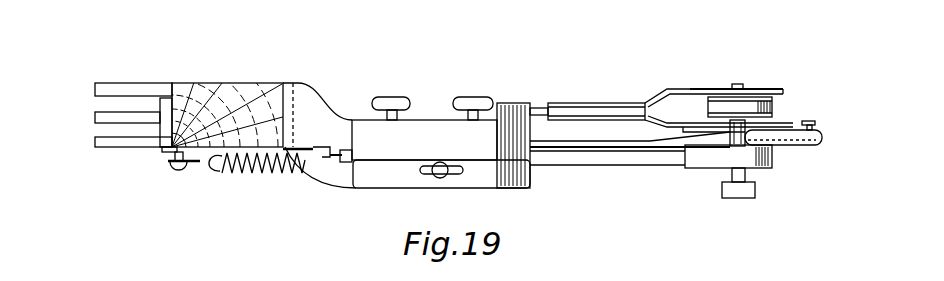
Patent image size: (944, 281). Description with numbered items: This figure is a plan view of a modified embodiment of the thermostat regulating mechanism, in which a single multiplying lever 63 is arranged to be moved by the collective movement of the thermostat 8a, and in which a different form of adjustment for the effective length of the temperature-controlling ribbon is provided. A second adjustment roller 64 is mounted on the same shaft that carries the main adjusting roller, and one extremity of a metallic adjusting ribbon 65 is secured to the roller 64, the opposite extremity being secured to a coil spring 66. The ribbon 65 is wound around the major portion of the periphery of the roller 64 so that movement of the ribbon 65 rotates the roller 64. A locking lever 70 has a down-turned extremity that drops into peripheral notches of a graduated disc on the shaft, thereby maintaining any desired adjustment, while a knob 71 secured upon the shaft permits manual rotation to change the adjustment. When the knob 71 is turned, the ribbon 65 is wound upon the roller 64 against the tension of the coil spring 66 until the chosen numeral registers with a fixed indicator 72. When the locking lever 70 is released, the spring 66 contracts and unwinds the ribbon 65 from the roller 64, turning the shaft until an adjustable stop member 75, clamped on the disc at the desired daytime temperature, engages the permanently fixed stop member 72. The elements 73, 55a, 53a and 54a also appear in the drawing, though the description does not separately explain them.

The thermostat 8a is at (225, 100).
The coil spring 66 is at (271, 172).
The body block 73 is at (427, 127).
The multiplying lever 63 is at (540, 104).
The top bar 55a is at (780, 98).
The tab 53a is at (742, 87).
The spool 54a is at (719, 97).
The fixed indicator 72 is at (740, 133).
The adjustable stop member 75 is at (823, 137).
The locking lever 70 is at (593, 151).
The adjusting ribbon 65 is at (677, 160).
The second adjustment roller 64 is at (763, 168).
The knob 71 is at (733, 198).